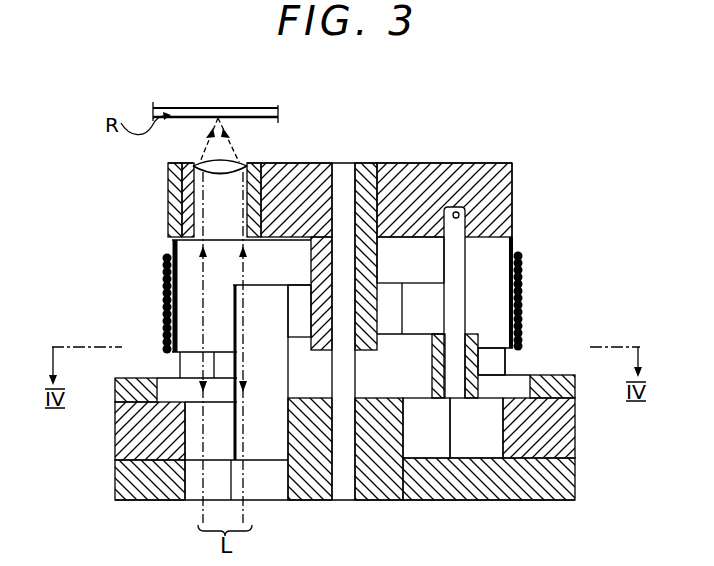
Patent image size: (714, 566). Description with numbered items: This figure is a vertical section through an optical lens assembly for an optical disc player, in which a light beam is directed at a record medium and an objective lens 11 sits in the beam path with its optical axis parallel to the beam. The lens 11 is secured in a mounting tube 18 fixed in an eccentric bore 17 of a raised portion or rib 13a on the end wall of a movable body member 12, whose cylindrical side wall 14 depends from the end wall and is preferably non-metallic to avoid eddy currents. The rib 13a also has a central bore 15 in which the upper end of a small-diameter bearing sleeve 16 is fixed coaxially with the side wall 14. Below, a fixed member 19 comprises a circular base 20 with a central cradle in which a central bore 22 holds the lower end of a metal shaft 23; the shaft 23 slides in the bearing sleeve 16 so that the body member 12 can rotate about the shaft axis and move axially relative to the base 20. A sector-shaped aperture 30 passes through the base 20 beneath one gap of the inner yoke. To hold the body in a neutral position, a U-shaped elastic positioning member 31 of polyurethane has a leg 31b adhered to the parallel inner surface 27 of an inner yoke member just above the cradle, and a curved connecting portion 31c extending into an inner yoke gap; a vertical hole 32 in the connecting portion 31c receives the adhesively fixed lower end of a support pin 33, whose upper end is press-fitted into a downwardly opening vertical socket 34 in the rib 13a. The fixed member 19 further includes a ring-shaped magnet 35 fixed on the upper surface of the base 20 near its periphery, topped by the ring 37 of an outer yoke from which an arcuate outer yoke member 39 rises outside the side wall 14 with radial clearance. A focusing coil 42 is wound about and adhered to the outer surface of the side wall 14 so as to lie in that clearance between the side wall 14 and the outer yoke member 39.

The objective lens 11 is at (227, 168).
The movable body member 12 is at (522, 228).
The raised portion or rib 13a is at (426, 175).
The cylindrical side wall 14 is at (507, 293).
The bore 15 is at (368, 170).
The bearing sleeve 16 is at (372, 265).
The bore 17 is at (190, 168).
The mounting tube 18 is at (170, 206).
The fixed member 19 is at (99, 440).
The base 20 is at (566, 475).
The central bore 22 is at (336, 495).
The shaft 23 is at (342, 373).
The inner surface 27 is at (297, 292).
The sector-shaped aperture 30 is at (186, 500).
The elastic positioning member 31 is at (412, 383).
The leg 31b is at (293, 350).
The curved connecting portion 31c is at (474, 337).
The vertical hole 32 is at (455, 386).
The support pin 33 is at (455, 270).
The vertical socket 34 is at (460, 215).
The ring-shaped magnet 35 is at (570, 440).
The ring 37 is at (567, 386).
The outer yoke member 39 is at (498, 360).
The focusing coil 42 is at (524, 262).